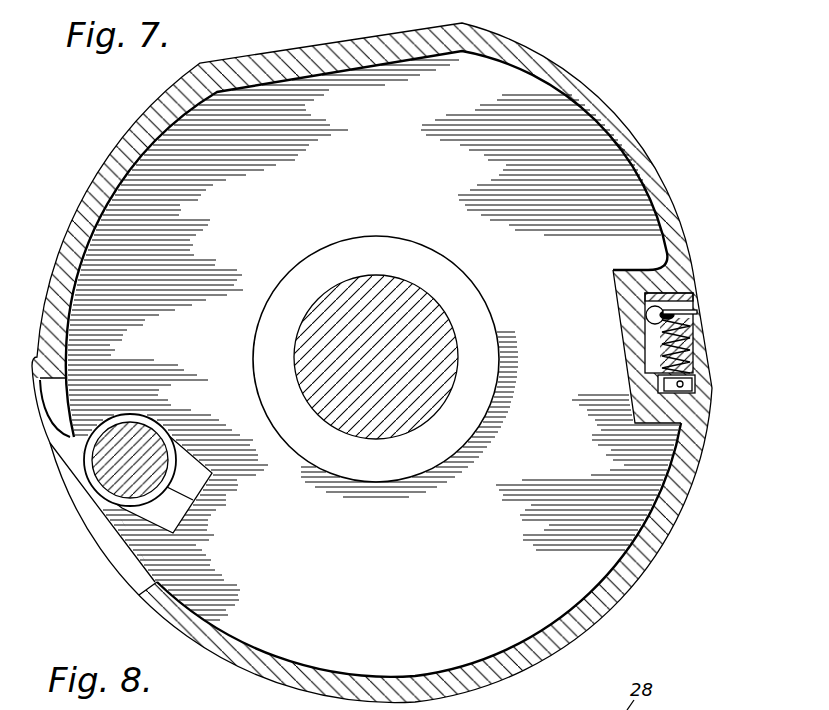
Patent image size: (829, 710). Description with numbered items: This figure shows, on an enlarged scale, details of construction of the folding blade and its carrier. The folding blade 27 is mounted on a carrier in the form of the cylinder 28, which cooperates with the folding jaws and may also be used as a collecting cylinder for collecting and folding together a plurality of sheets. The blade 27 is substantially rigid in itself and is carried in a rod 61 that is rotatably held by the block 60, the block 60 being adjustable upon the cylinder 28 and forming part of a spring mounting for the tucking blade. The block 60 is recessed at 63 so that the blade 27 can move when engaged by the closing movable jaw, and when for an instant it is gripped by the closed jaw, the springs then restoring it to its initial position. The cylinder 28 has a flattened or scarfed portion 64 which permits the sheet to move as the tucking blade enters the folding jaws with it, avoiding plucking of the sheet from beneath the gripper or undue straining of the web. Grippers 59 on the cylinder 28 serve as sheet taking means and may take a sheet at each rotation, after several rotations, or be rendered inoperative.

The flattened or scarfed portion 64 is at (302, 48).
The cylinder 28 is at (527, 95).
The rod 61 is at (678, 290).
The folding blade 27 is at (695, 308).
The recess 63 is at (668, 313).
The block 60 is at (703, 355).
The grippers 59 is at (56, 437).